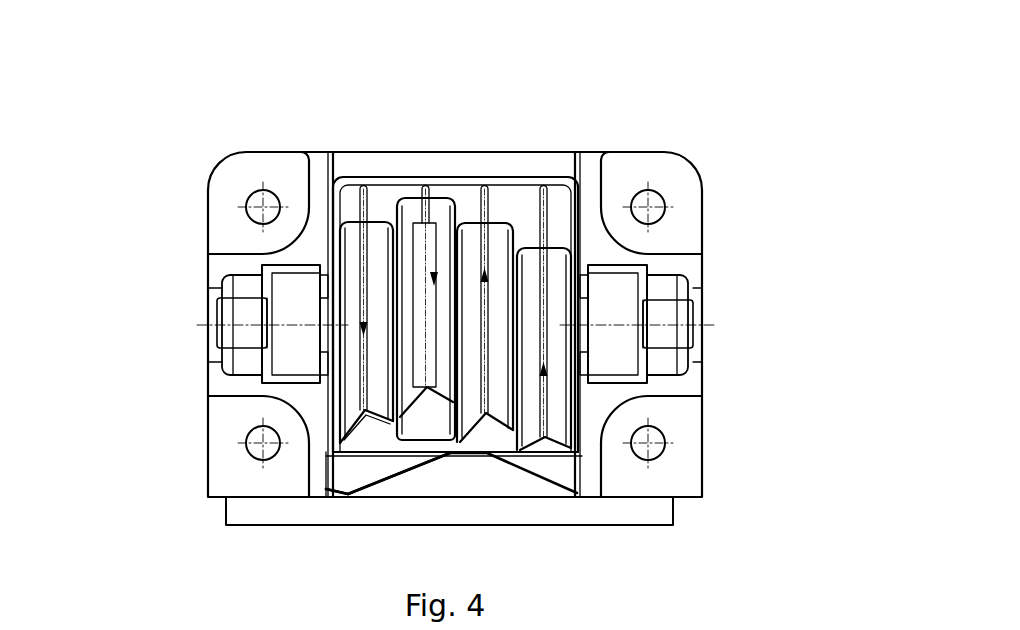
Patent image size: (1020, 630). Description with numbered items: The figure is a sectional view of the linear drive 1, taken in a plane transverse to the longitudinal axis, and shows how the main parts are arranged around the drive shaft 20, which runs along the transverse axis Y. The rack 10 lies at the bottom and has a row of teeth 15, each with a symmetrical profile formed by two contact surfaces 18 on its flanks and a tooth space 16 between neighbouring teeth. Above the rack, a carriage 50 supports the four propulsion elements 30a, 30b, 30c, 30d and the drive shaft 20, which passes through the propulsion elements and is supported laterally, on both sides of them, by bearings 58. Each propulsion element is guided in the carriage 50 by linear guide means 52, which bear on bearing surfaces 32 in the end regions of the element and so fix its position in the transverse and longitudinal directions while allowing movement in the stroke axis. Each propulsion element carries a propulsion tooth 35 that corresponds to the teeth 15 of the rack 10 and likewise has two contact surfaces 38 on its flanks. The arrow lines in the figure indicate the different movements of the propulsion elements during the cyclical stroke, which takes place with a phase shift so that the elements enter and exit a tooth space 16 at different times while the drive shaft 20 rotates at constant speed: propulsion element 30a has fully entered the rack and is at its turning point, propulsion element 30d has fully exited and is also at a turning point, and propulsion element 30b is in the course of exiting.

The linear drive 1 is at (86, 96).
The rack 10 is at (198, 537).
The teeth 15 is at (470, 460).
The tooth space 16 is at (348, 492).
The contact surfaces 18 is at (407, 466).
The drive shaft 20 is at (233, 315).
The propulsion element 30a is at (557, 272).
The propulsion element 30b is at (502, 243).
The propulsion element 30c is at (377, 237).
The propulsion element 30d is at (445, 208).
The bearing surfaces 32 is at (380, 245).
The propulsion tooth 35 is at (365, 442).
The contact surfaces 38 is at (347, 455).
The carriage 50 is at (722, 163).
The linear guide means 52 is at (346, 205).
The bearings 58 is at (280, 283).
The transverse axis Y is at (197, 325).